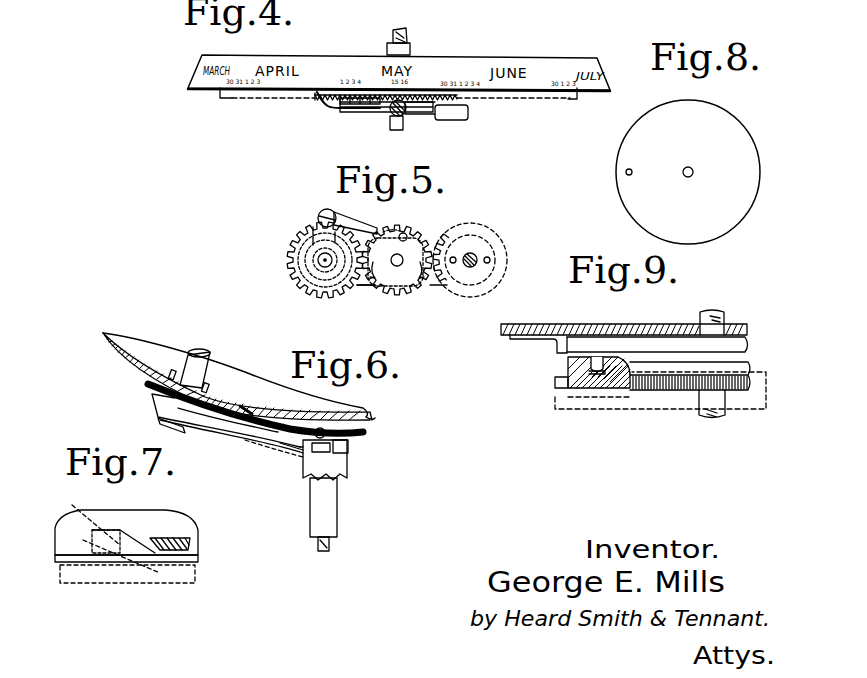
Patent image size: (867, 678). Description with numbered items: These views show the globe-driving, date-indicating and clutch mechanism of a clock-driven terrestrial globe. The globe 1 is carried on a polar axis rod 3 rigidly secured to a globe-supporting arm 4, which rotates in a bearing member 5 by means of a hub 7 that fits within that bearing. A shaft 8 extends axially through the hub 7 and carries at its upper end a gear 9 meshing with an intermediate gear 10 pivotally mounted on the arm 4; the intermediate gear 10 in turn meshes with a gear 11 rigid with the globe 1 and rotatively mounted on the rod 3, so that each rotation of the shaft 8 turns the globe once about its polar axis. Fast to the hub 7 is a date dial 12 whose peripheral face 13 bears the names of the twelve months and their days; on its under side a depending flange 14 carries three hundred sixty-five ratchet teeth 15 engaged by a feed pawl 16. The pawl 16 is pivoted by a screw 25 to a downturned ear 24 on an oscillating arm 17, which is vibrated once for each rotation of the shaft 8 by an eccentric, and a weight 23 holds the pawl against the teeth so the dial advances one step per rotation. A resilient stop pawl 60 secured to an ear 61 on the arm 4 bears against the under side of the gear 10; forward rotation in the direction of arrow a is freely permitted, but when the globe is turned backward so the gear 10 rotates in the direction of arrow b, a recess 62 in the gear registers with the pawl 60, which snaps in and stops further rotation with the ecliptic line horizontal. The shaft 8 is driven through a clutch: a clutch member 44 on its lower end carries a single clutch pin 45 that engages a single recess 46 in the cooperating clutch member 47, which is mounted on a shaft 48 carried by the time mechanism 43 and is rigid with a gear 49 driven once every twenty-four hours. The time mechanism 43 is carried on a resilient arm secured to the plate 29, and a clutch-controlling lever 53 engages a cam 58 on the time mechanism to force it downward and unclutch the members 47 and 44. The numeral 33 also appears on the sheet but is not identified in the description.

In FIG. 6, the globe 1 is at (104, 343).
In FIG. 5, the polar axis rod 3 is at (472, 258).
In FIG. 6, the polar axis rod 3 is at (190, 351).
In FIG. 5, the globe-supporting arm 4 is at (361, 285).
In FIG. 6, the globe-supporting arm 4 is at (273, 445).
In FIG. 6, the bearing member 5 is at (348, 476).
In FIG. 4, the hub 7 is at (387, 50).
In FIG. 6, the hub 7 is at (338, 520).
In FIG. 4, the shaft 8 is at (408, 37).
In FIG. 5, the shaft 8 is at (320, 262).
In FIG. 6, the shaft 8 is at (330, 546).
In FIG. 8, the shaft 8 is at (688, 167).
In FIG. 9, the shaft 8 is at (711, 315).
In FIG. 5, the gear 9 is at (290, 258).
In FIG. 6, the gear 9 is at (365, 432).
In FIG. 5, the intermediate gear 10 is at (392, 288).
In FIG. 6, the intermediate gear 10 is at (236, 415).
In FIG. 5, the gear 11 is at (448, 286).
In FIG. 6, the gear 11 is at (150, 383).
In FIG. 4, the date dial 12 is at (487, 57).
In FIG. 4, the peripheral face 13 is at (552, 58).
In FIG. 4, the depending flange 14 is at (315, 93).
In FIG. 4, the ratchet teeth 15 is at (362, 99).
In FIG. 4, the feed pawl 16 is at (373, 109).
In FIG. 4, the oscillating arm 17 is at (427, 100).
In FIG. 4, the weight 23 is at (467, 115).
In FIG. 4, the downturned ear 24 is at (410, 108).
In FIG. 4, the screw 25 is at (388, 117).
In FIG. 9, the plate 29 is at (547, 313).
In FIG. 4, the strip 33 is at (432, 0).
In FIG. 7, the time mechanism 43 is at (160, 521).
In FIG. 8, the clutch member 44 is at (745, 202).
In FIG. 9, the clutch member 44 is at (656, 342).
In FIG. 8, the clutch pin 45 is at (626, 172).
In FIG. 9, the clutch pin 45 is at (568, 386).
In FIG. 9, the recess 46 is at (598, 373).
In FIG. 9, the cooperating clutch member 47 is at (568, 360).
In FIG. 9, the shaft 48 is at (700, 417).
In FIG. 9, the gear 49 is at (555, 382).
In FIG. 7, the clutch-controlling lever 53 is at (212, 527).
In FIG. 7, the cam 58 is at (125, 530).
In FIG. 5, the stop pawl 60 is at (356, 221).
In FIG. 6, the stop pawl 60 is at (282, 441).
In FIG. 5, the ear 61 is at (317, 218).
In FIG. 6, the ear 61 is at (348, 450).
In FIG. 5, the recess 62 is at (413, 236).
In FIG. 6, the recess 62 is at (247, 410).